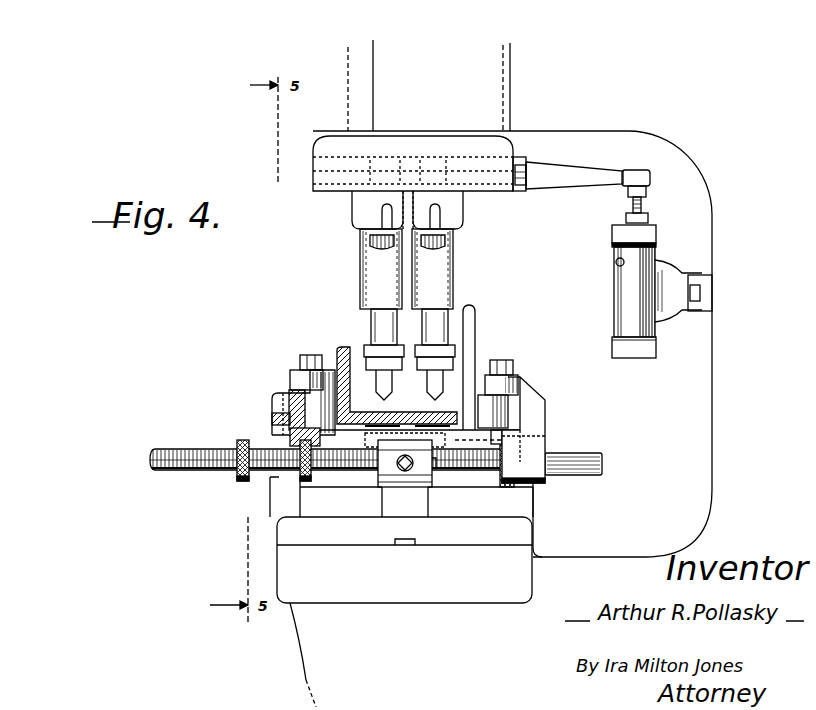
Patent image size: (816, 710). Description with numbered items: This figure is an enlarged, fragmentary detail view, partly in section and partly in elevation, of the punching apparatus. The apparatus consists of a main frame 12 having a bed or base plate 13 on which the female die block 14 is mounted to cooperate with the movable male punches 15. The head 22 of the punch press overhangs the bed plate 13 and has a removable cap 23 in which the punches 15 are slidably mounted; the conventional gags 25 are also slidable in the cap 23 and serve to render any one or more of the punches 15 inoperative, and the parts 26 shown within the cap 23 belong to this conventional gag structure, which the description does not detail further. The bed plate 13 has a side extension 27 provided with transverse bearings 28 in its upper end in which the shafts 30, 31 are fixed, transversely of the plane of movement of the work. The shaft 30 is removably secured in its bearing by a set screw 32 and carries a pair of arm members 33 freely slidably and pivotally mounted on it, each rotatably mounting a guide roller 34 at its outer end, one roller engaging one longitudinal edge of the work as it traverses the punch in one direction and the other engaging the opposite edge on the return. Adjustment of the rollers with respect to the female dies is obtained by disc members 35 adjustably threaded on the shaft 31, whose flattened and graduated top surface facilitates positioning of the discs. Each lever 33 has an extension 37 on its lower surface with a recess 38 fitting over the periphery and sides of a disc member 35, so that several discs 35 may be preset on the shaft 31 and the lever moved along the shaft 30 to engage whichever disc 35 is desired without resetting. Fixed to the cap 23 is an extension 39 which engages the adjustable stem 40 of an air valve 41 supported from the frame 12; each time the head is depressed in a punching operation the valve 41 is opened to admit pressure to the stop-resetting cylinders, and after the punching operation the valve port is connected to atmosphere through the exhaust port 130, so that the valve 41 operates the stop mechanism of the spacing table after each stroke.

The main frame 12 is at (312, 660).
The bed plate 13 is at (535, 530).
The female die block 14 is at (428, 414).
The punch 15 is at (443, 386).
The head 22 is at (355, 68).
The cap 23 is at (333, 133).
The gag 25 is at (422, 203).
The pin 26 is at (378, 208).
The side extension 27 is at (418, 507).
The bearing 28 is at (388, 468).
The shaft 30 is at (604, 463).
The shaft 31 is at (150, 460).
The set screw 32 is at (408, 472).
The arm member 33 is at (302, 388).
The guide roller 34 is at (305, 405).
The disc member 35 is at (241, 484).
The extension 37 is at (292, 437).
The recess 38 is at (288, 415).
The extension 39 is at (606, 168).
The adjustable stem 40 is at (646, 205).
The air valve 41 is at (632, 291).
The exhaust port 130 is at (614, 262).